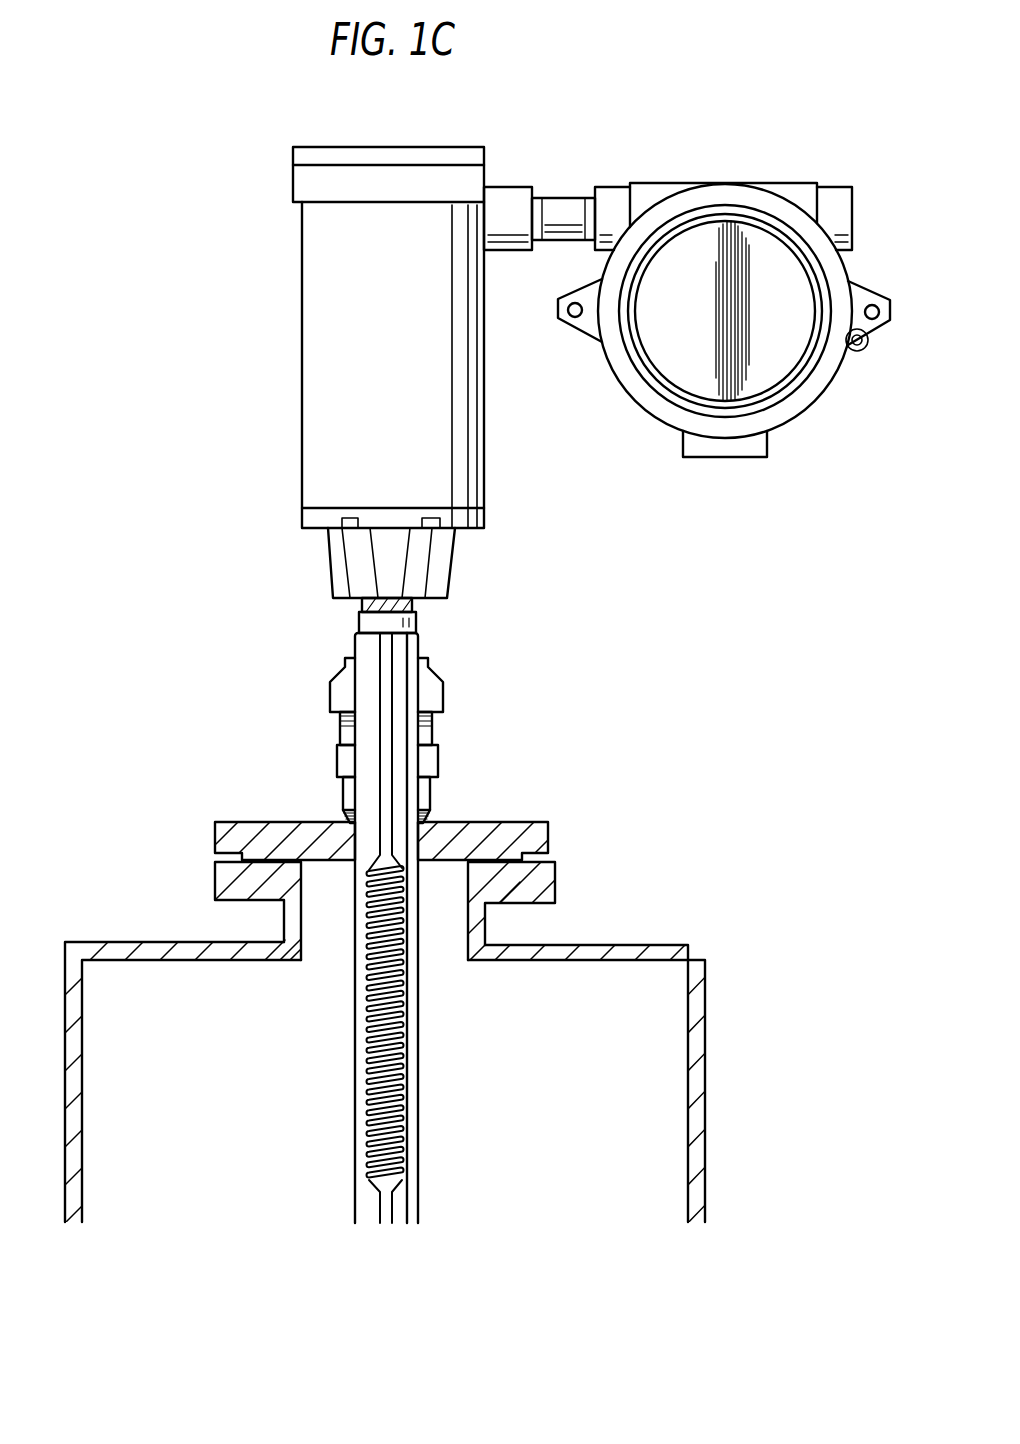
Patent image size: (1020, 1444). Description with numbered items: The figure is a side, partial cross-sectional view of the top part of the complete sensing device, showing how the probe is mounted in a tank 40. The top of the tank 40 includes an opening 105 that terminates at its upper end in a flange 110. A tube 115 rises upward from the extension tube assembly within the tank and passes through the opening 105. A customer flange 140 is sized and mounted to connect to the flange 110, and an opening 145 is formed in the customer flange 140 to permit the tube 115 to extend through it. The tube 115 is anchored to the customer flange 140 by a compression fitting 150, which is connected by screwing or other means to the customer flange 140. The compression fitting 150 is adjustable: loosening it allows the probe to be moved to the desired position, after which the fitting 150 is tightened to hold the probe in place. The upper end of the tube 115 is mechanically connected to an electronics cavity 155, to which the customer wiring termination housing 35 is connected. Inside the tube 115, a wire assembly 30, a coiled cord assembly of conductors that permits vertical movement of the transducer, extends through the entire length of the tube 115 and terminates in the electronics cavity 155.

The electronics cavity 155 is at (437, 490).
The customer wiring termination housing 35 is at (836, 186).
The compression fitting 150 is at (443, 690).
The opening 145 is at (460, 826).
The customer flange 140 is at (550, 838).
The flange 110 is at (556, 887).
The opening 105 is at (450, 923).
The tank 40 is at (707, 1037).
The wire assembly 30 is at (403, 1057).
The tube 115 is at (352, 1092).